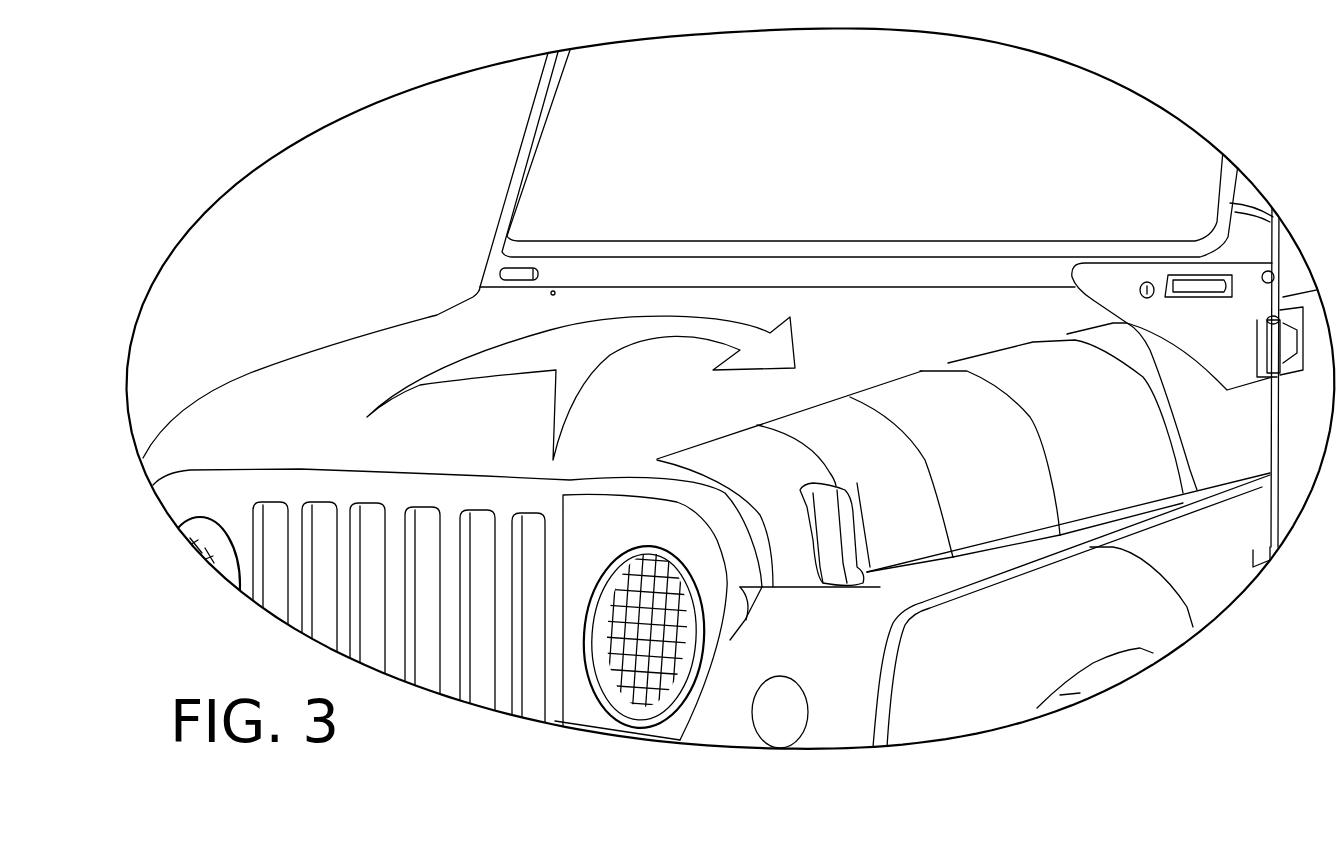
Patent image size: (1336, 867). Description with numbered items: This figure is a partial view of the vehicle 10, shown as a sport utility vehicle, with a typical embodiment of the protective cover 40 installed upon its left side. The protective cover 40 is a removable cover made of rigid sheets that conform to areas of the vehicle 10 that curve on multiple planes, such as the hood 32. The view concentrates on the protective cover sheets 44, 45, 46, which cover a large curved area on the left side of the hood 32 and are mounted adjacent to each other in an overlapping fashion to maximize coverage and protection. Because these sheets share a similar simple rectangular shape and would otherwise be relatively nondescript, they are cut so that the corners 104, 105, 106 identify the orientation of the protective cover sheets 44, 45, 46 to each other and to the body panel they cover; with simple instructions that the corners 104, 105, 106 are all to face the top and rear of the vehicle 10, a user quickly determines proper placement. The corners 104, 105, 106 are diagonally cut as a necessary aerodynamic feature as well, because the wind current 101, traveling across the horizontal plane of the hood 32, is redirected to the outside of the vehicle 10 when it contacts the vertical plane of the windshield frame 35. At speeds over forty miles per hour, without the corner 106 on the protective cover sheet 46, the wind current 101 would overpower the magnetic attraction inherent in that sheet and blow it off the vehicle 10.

The vehicle 10 is at (436, 316).
The hood 32 is at (284, 441).
The windshield frame 35 is at (755, 270).
The protective cover 40 is at (657, 459).
The protective cover sheet 44 is at (917, 538).
The protective cover sheet 45 is at (993, 513).
The protective cover sheet 46 is at (1080, 493).
The wind current 101 is at (616, 369).
The corner 104 is at (832, 400).
The corner 105 is at (937, 372).
The corner 106 is at (1047, 338).